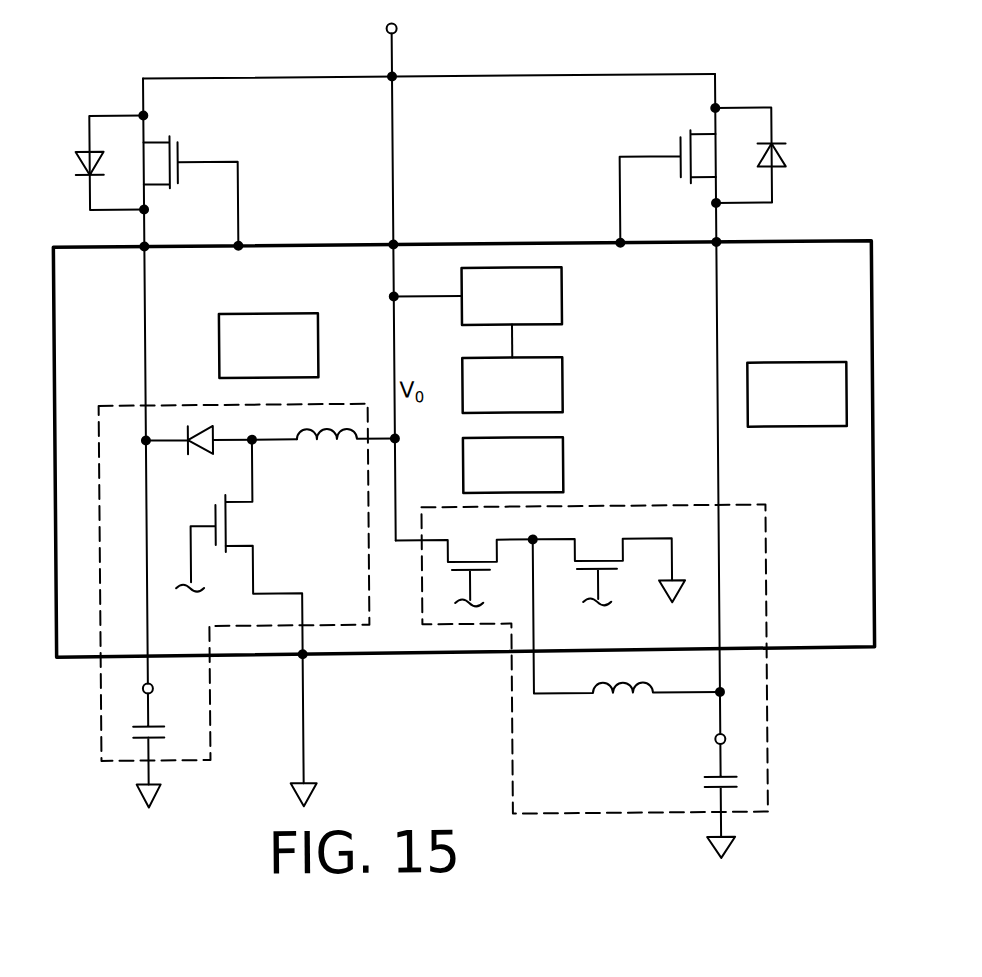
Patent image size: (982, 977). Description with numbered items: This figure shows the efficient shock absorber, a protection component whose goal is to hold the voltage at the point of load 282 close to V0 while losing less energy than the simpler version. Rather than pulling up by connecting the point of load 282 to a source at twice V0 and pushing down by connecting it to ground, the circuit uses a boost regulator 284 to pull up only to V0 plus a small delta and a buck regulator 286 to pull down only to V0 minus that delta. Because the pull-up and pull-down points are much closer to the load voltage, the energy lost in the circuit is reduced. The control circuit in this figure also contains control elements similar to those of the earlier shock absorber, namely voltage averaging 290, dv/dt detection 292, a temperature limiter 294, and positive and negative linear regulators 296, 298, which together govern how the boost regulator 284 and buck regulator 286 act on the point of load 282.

The point of load 282 is at (390, 27).
The boost regulator 284 is at (100, 695).
The buck regulator 286 is at (766, 575).
The voltage averaging 290 is at (563, 296).
The dv/dt detection 292 is at (563, 385).
The temperature limiter 294 is at (563, 465).
The positive linear regulator 296 is at (249, 311).
The negative linear regulator 298 is at (821, 364).